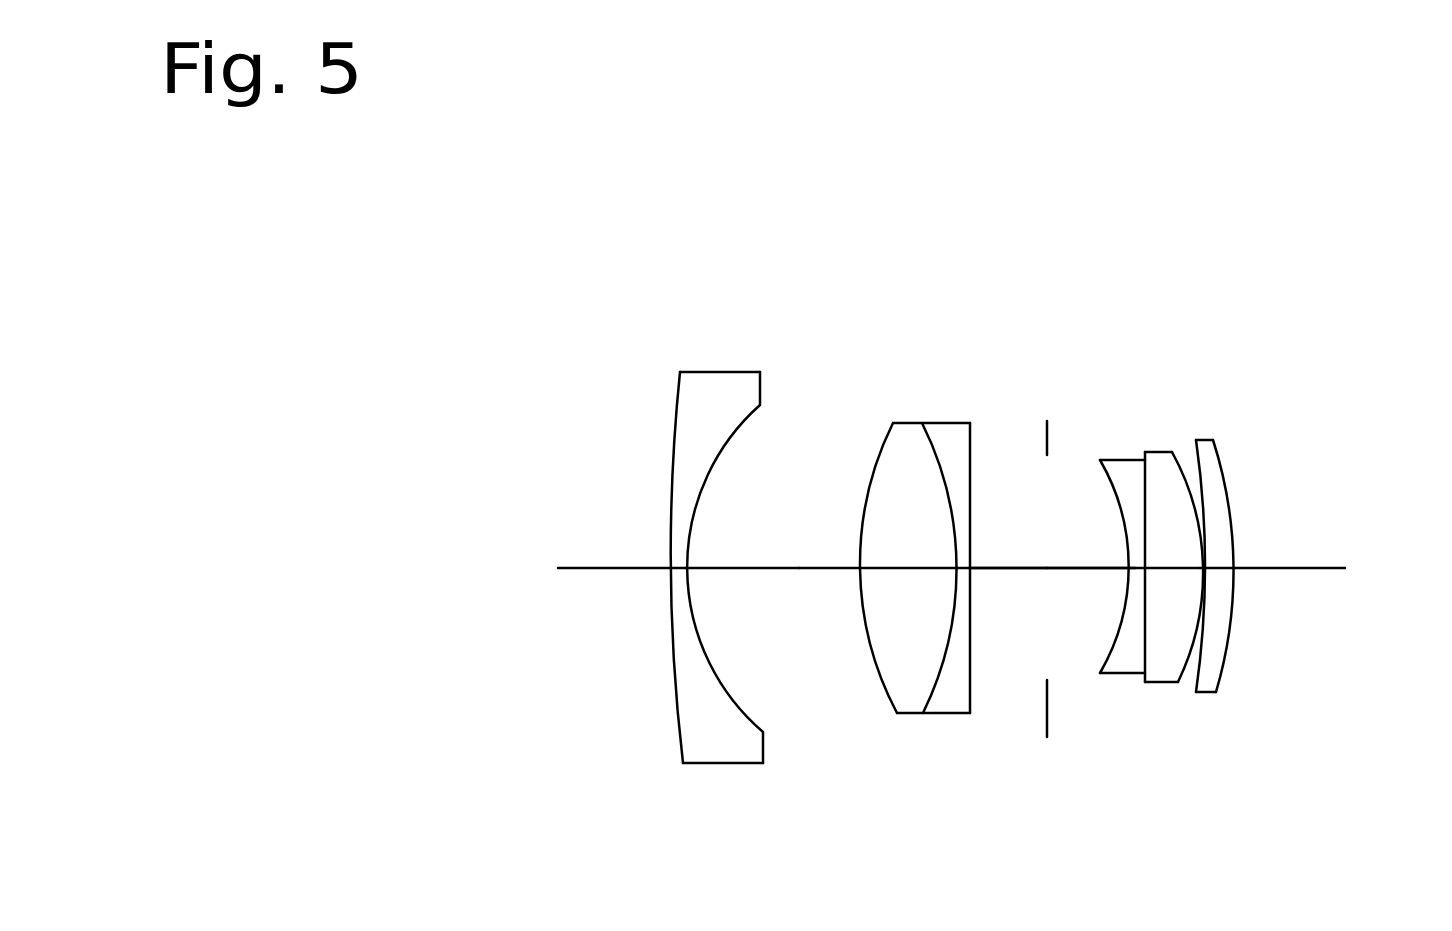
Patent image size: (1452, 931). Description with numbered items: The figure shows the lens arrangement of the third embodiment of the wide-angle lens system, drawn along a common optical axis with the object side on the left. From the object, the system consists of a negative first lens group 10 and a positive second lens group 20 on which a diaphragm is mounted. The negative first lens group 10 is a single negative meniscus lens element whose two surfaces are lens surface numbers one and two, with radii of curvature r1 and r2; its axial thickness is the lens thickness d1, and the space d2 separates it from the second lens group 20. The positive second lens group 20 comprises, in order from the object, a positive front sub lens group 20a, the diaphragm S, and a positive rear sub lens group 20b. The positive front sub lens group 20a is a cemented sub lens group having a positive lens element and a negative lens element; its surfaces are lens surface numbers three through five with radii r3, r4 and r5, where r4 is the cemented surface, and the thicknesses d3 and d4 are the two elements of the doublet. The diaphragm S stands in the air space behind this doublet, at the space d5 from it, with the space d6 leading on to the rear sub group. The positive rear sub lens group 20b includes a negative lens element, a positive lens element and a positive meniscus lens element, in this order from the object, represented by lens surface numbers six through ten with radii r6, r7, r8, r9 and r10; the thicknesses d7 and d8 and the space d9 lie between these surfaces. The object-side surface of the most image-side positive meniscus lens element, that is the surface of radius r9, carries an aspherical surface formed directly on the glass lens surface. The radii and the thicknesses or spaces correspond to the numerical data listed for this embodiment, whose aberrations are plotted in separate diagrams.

The negative first lens group 10 is at (772, 342).
The positive second lens group 20 is at (1263, 316).
The positive 2a sub lens group 20a is at (983, 403).
The positive 2b sub lens group 20b is at (1248, 420).
The diaphragm S is at (1047, 421).
The radius of curvature of lens surface No. 1 r1 is at (680, 372).
The radius of curvature of lens surface No. 2 r2 is at (760, 372).
The radius of curvature of lens surface No. 3 r3 is at (893, 423).
The radius of curvature of lens surface No. 4 r4 is at (920, 423).
The radius of curvature of lens surface No. 5 r5 is at (1083, 292).
The radius of curvature of lens surface No. 6 r6 is at (1102, 460).
The radius of curvature of lens surface No. 7 r7 is at (1145, 452).
The radius of curvature of lens surface No. 8 r8 is at (1172, 452).
The radius of curvature of lens surface No. 9 r9 is at (1196, 440).
The radius of curvature of lens surface No. 10 r10 is at (1213, 440).
The lens thickness d1 is at (677, 568).
The space d2 is at (799, 568).
The lens thickness d3 is at (903, 568).
The lens thickness d4 is at (962, 568).
The space d5 is at (1021, 568).
The space d6 is at (1135, 568).
The lens thickness d7 is at (1173, 568).
The lens thickness d8 is at (1202, 568).
The space d9 is at (1228, 568).